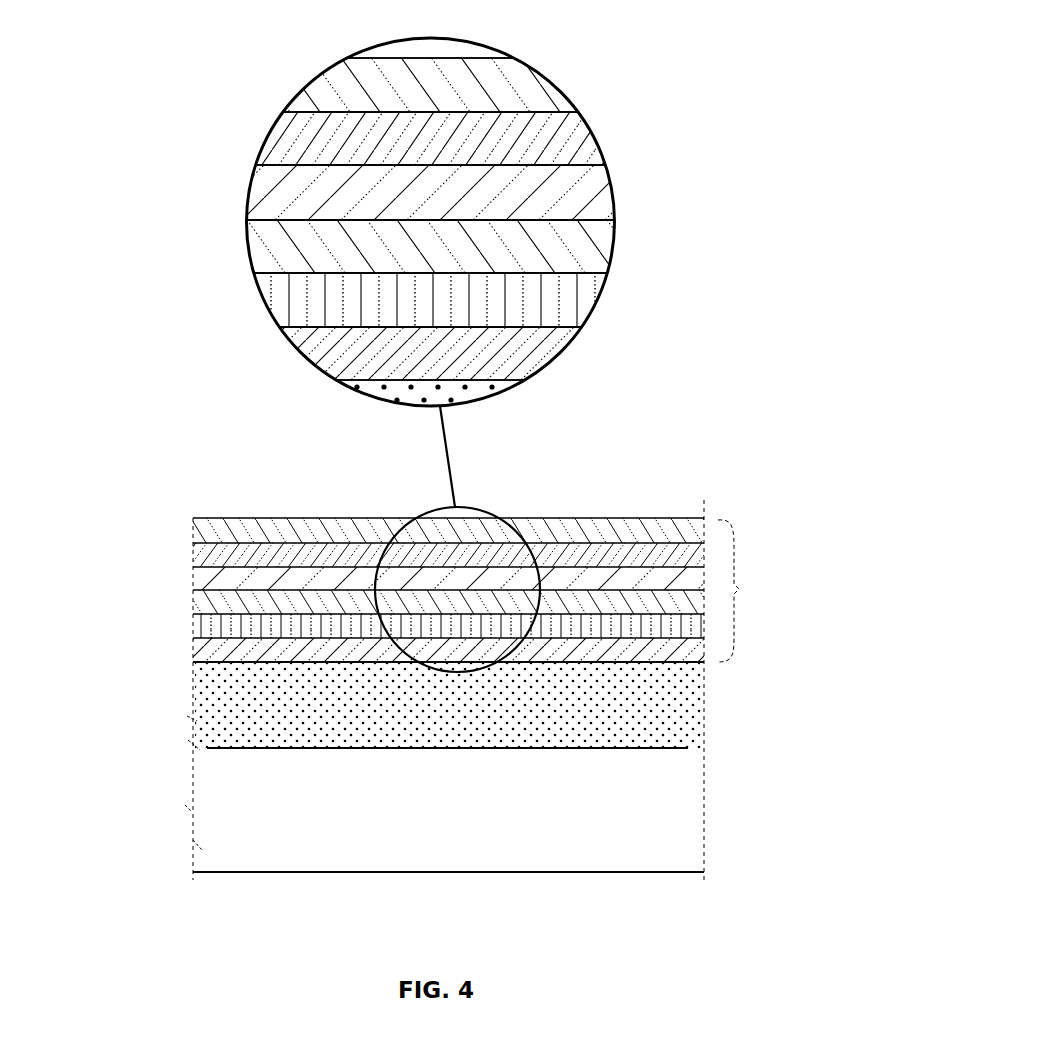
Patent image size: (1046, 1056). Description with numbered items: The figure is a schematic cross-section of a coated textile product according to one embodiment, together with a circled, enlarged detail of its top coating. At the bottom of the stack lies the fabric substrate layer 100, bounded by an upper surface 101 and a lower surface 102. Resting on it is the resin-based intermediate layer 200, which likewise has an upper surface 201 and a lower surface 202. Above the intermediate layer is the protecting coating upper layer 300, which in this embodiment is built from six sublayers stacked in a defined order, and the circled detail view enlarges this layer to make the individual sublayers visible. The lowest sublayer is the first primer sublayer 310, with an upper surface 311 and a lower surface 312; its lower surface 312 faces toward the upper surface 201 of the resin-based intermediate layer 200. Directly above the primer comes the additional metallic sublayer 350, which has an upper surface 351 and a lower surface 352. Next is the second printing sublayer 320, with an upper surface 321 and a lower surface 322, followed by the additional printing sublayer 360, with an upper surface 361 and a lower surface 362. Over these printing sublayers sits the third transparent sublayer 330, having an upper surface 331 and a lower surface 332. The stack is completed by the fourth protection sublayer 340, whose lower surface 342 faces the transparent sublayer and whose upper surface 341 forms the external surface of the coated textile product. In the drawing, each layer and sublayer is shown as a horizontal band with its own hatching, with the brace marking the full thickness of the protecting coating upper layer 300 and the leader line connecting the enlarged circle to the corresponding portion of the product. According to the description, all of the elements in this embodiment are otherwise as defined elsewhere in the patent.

The fabric substrate layer 100 is at (225, 795).
The upper surface of the fabric substrate layer 101 is at (688, 752).
The lower surface of the fabric substrate layer 102 is at (672, 872).
The resin-based intermediate layer 200 is at (200, 725).
The upper surface of the resin-based intermediate layer 201 is at (688, 665).
The lower surface of the resin-based intermediate layer 202 is at (660, 735).
The protecting coating upper layer 300 is at (305, 70).
The first primer sublayer 310 is at (196, 655).
The upper surface of the first primer sublayer 311 is at (513, 332).
The lower surface of the first primer sublayer 312 is at (332, 348).
The second printing sublayer 320 is at (192, 615).
The upper surface of the second printing sublayer 321 is at (575, 230).
The lower surface of the second printing sublayer 322 is at (285, 265).
The third transparent sublayer 330 is at (195, 548).
The upper surface of the third transparent sublayer 331 is at (555, 124).
The lower surface of the third transparent sublayer 332 is at (325, 150).
The fourth protection sublayer 340 is at (193, 522).
The upper surface of the fourth protection sublayer 341 is at (487, 58).
The lower surface of the fourth protection sublayer 342 is at (350, 108).
The additional metallic sublayer 350 is at (195, 640).
The upper surface of the additional metallic sublayer 351 is at (568, 285).
The lower surface of the additional metallic sublayer 352 is at (300, 320).
The additional printing sublayer 360 is at (193, 575).
The upper surface of the additional printing sublayer 361 is at (570, 180).
The lower surface of the additional printing sublayer 362 is at (295, 205).